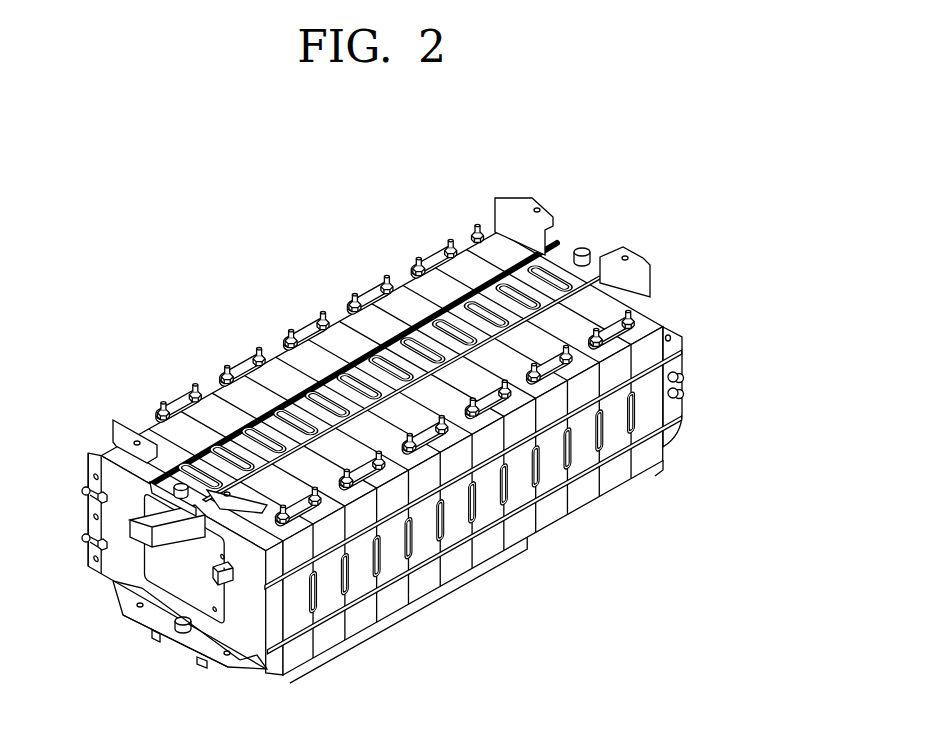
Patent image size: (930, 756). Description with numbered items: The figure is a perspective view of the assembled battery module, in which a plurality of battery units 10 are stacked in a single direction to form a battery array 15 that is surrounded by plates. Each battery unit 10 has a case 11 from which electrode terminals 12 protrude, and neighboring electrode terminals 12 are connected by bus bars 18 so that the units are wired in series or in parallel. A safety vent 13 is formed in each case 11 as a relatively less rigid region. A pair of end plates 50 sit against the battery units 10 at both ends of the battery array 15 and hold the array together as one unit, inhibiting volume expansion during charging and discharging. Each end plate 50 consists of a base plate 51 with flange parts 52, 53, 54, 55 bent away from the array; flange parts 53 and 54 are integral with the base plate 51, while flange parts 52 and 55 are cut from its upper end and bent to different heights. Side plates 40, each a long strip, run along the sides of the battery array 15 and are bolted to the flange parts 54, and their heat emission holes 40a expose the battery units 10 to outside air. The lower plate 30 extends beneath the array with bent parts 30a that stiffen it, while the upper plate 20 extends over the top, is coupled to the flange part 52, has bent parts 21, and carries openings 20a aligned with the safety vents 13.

The battery unit 10 is at (329, 651).
The case 11 is at (278, 344).
The electrode terminal 12 is at (322, 318).
The safety vent 13 is at (484, 306).
The battery array 15 is at (515, 548).
The bus bar 18 is at (248, 367).
The upper plate 20 is at (573, 253).
The opening 20a is at (578, 282).
The bent part 21 is at (558, 243).
The lower plate 30 is at (163, 644).
The bent part 30a is at (203, 663).
The side plate 40 is at (423, 548).
The heat emission hole 40a is at (445, 535).
The end plate 50 is at (654, 294).
The base plate 51 is at (142, 588).
The flange part 52 is at (148, 492).
The flange part 53 is at (157, 620).
The flange part 54 is at (88, 462).
The flange part 55 is at (127, 428).